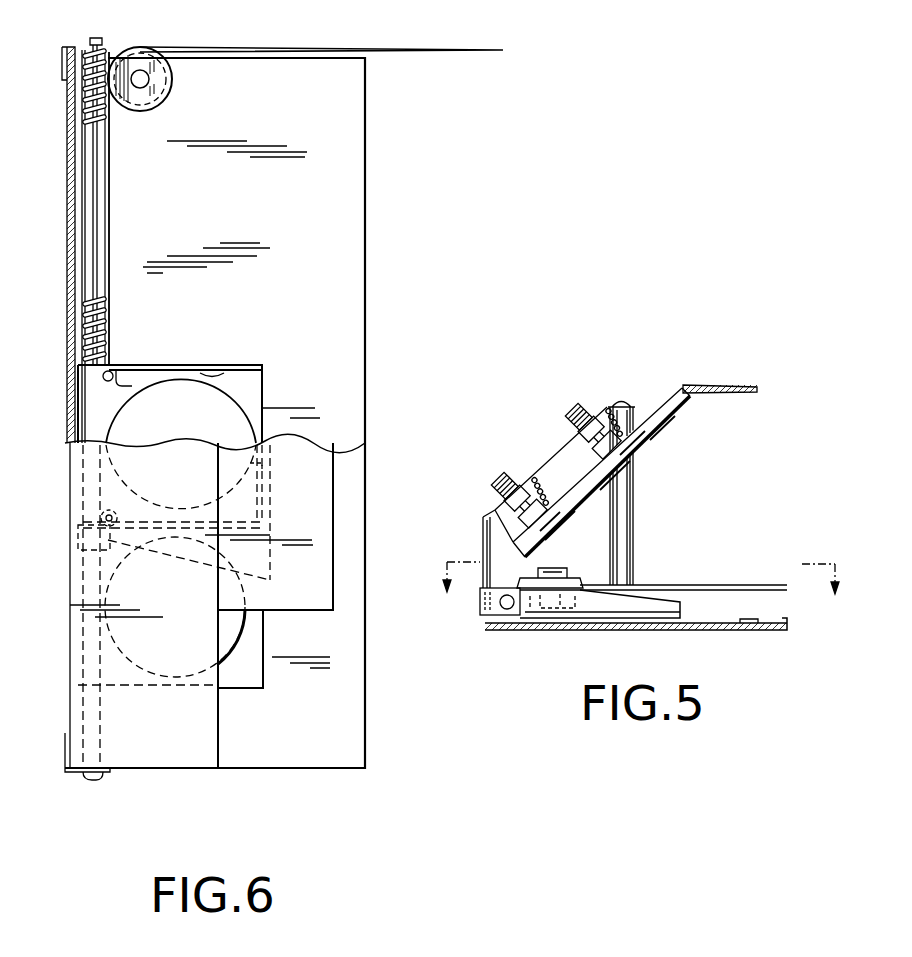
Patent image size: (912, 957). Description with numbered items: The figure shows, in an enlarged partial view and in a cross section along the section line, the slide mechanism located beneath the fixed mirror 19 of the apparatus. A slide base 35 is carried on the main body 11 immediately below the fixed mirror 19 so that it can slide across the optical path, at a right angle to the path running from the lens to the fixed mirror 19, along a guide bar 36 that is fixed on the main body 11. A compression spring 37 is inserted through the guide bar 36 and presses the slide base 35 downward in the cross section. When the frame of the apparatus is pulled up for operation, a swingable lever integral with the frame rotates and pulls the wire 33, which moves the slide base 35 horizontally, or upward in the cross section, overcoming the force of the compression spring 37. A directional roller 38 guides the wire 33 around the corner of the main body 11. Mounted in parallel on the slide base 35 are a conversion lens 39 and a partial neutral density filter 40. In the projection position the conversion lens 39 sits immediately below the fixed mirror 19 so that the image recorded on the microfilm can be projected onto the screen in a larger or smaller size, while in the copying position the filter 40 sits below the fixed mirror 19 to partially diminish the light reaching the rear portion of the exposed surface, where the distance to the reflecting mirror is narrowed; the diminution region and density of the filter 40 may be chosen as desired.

In FIG. 6, the main body 11 is at (367, 342).
In FIG. 5, the main body 11 is at (716, 628).
In FIG. 6, the fixed mirror 19 is at (272, 493).
In FIG. 5, the fixed mirror 19 is at (668, 423).
In FIG. 6, the wire 33 is at (455, 30).
In FIG. 5, the wire 33 is at (745, 561).
In FIG. 6, the slide base 35 is at (233, 362).
In FIG. 5, the slide base 35 is at (620, 620).
In FIG. 6, the guide bar 36 is at (93, 248).
In FIG. 5, the guide bar 36 is at (505, 618).
In FIG. 6, the compression spring 37 is at (90, 313).
In FIG. 6, the directional roller 38 is at (172, 90).
In FIG. 5, the directional roller 38 is at (520, 570).
In FIG. 6, the conversion lens 39 is at (233, 412).
In FIG. 6, the partial neutral density filter 40 is at (233, 637).